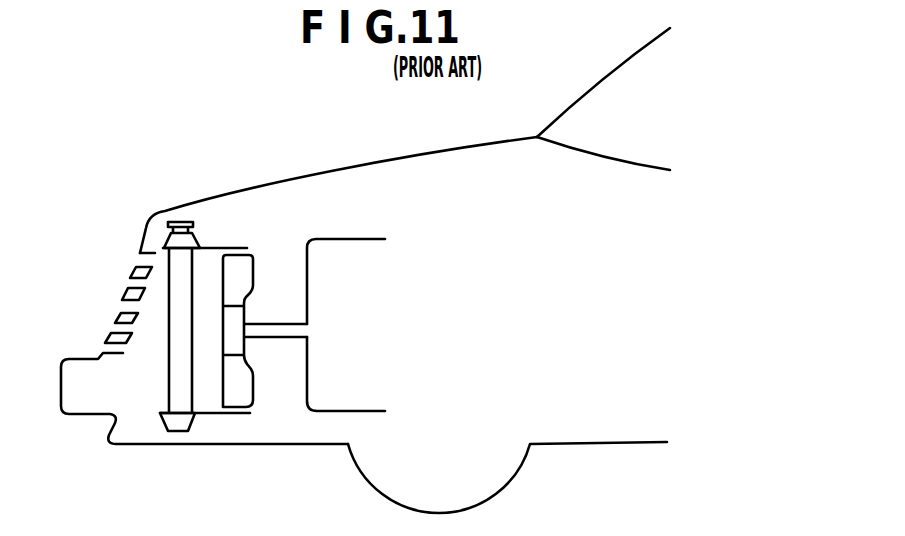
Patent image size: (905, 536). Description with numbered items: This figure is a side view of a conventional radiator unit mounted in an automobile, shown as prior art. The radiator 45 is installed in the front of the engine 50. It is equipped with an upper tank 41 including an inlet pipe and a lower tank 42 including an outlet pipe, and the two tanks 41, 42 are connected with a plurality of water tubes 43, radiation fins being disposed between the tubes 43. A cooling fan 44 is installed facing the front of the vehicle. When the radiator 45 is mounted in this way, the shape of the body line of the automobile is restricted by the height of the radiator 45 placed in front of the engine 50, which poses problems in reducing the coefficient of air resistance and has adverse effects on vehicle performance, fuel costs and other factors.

The upper tank 41 is at (192, 245).
The lower tank 42 is at (181, 418).
The water tubes 43 is at (168, 370).
The cooling fan 44 is at (245, 270).
The radiator 45 is at (162, 303).
The engine 50 is at (348, 238).